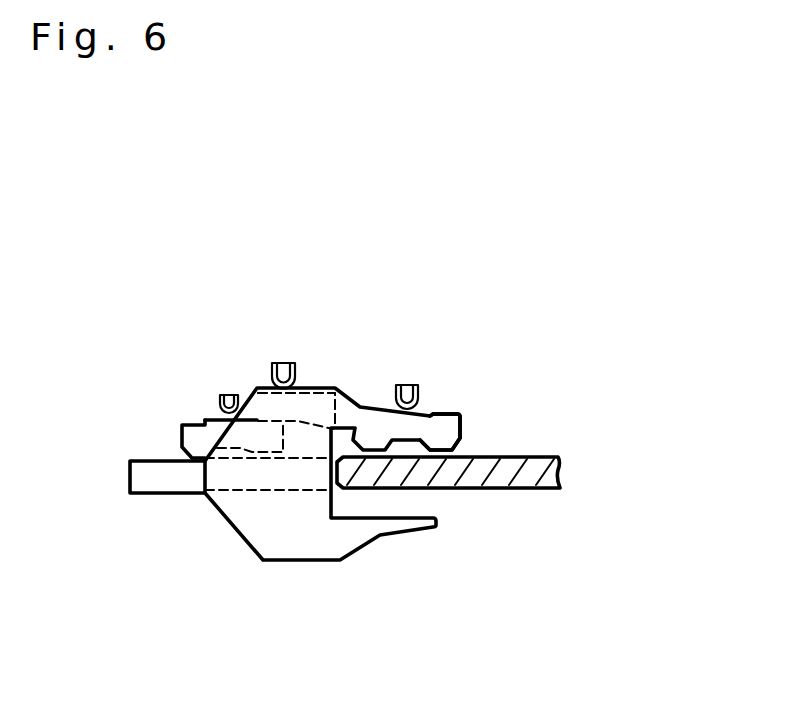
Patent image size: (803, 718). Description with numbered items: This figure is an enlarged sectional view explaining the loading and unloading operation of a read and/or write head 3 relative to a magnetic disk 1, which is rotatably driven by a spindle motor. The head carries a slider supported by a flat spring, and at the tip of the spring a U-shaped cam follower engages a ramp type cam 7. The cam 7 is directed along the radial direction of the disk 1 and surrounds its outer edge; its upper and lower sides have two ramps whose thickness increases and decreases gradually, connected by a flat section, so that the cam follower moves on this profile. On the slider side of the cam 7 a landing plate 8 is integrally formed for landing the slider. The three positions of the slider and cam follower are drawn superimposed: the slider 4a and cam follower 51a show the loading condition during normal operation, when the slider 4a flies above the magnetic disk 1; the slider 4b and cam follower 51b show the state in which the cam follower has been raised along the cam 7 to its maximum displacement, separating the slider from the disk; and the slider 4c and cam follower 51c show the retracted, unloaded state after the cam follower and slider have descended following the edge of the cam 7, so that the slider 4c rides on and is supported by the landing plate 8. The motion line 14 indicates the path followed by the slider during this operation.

The magnetic disk 1 is at (533, 463).
The read and/or write head 3 is at (446, 411).
The slider 4a is at (463, 433).
The slider 4b is at (265, 388).
The slider 4c is at (187, 442).
The ramp type cam 7 is at (360, 406).
The landing plate 8 is at (163, 483).
The motion line 14 is at (228, 280).
The cam follower 51a is at (420, 397).
The cam follower 51b is at (300, 388).
The cam follower 51c is at (220, 402).